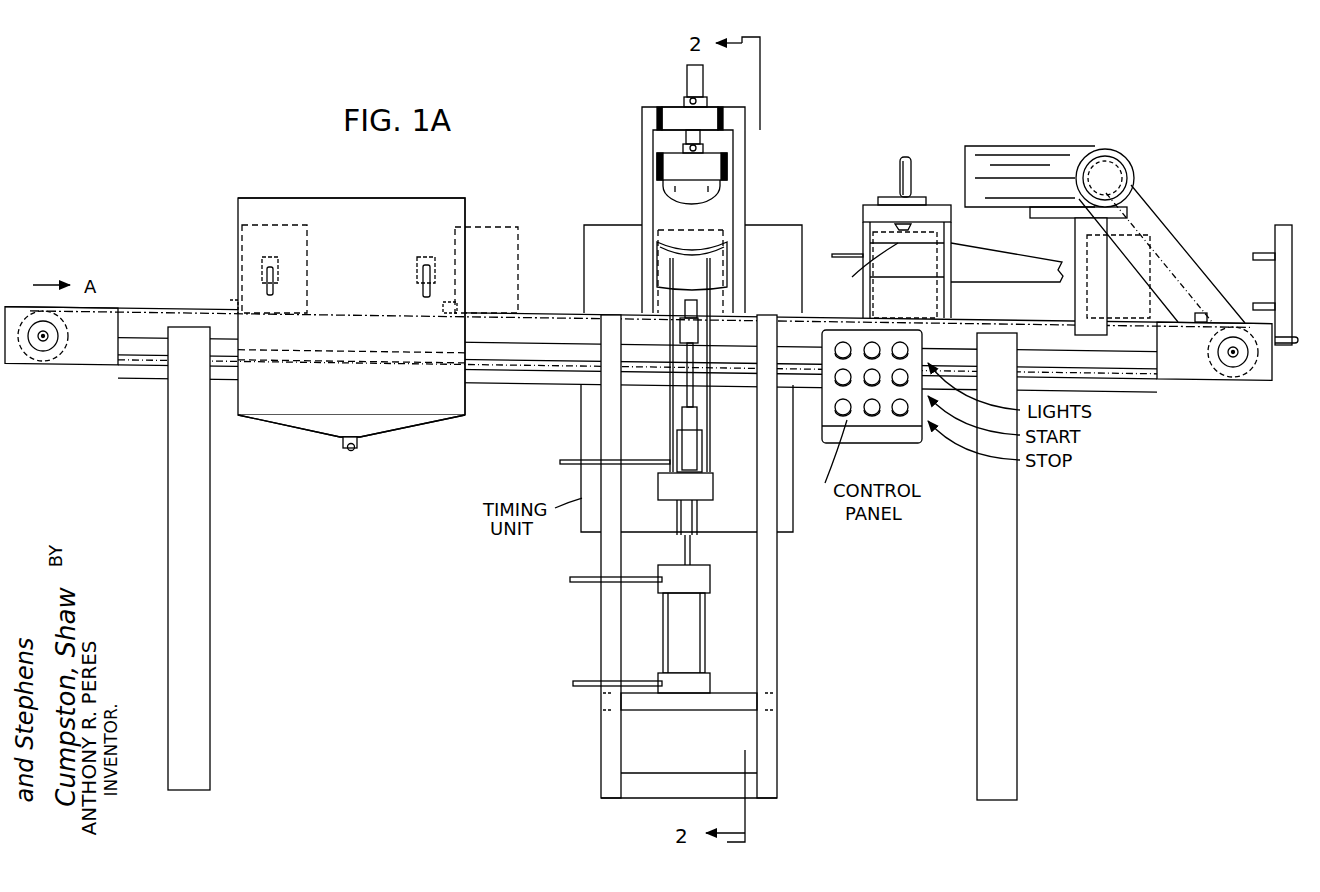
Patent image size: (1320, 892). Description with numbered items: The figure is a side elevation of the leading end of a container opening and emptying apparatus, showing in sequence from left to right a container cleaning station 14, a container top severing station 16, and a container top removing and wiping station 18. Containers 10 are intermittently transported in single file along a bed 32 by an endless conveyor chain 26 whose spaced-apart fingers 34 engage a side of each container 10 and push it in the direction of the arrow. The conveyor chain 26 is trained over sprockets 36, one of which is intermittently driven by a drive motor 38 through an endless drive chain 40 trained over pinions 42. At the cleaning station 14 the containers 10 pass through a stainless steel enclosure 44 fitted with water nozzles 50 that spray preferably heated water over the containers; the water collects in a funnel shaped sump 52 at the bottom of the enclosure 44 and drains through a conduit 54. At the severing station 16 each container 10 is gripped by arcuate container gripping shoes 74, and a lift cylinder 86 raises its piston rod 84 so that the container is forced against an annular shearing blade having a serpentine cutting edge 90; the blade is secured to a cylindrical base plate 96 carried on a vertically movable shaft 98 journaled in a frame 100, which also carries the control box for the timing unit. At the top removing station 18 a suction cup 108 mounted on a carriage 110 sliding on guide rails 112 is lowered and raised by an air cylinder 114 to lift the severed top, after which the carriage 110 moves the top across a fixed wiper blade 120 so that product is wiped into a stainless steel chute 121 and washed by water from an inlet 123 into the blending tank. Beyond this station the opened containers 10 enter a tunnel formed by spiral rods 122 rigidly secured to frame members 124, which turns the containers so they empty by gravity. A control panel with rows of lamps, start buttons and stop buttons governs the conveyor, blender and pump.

The container 10 is at (307, 230).
The container cleaning station 14 is at (311, 184).
The container top severing station 16 is at (617, 205).
The container top removing and wiping station 18 is at (928, 158).
The endless conveyor chain 26 is at (147, 362).
The bed 32 is at (539, 319).
The fingers 34 is at (234, 304).
The sprockets 36 is at (25, 365).
The drive motor 38 is at (1040, 163).
The endless drive chain 40 is at (1170, 219).
The pinions 42 is at (1113, 175).
The stainless steel enclosure 44 is at (423, 210).
The water nozzles 50 is at (272, 270).
The funnel shaped sump 52 is at (307, 432).
The conduit 54 is at (362, 442).
The arcuate container gripping shoe 74 is at (722, 264).
The piston rod 84 is at (690, 552).
The lift fluid or air cylinder 86 is at (705, 634).
The serpentine cutting surface or edge 90 is at (718, 196).
The cylindrical base plate 96 is at (727, 165).
The vertically movable shaft 98 is at (686, 80).
The frame 100 is at (647, 118).
The suction cup 108 is at (905, 226).
The carriage 110 is at (880, 198).
The guide rails 112 is at (951, 215).
The air cylinder 114 is at (900, 175).
The fixed wiper blade 120 is at (857, 268).
The stainless steel chute 121 is at (1013, 270).
The spiral rods 122 is at (1267, 257).
The inlet 123 is at (843, 252).
The frame members 124 is at (1273, 238).